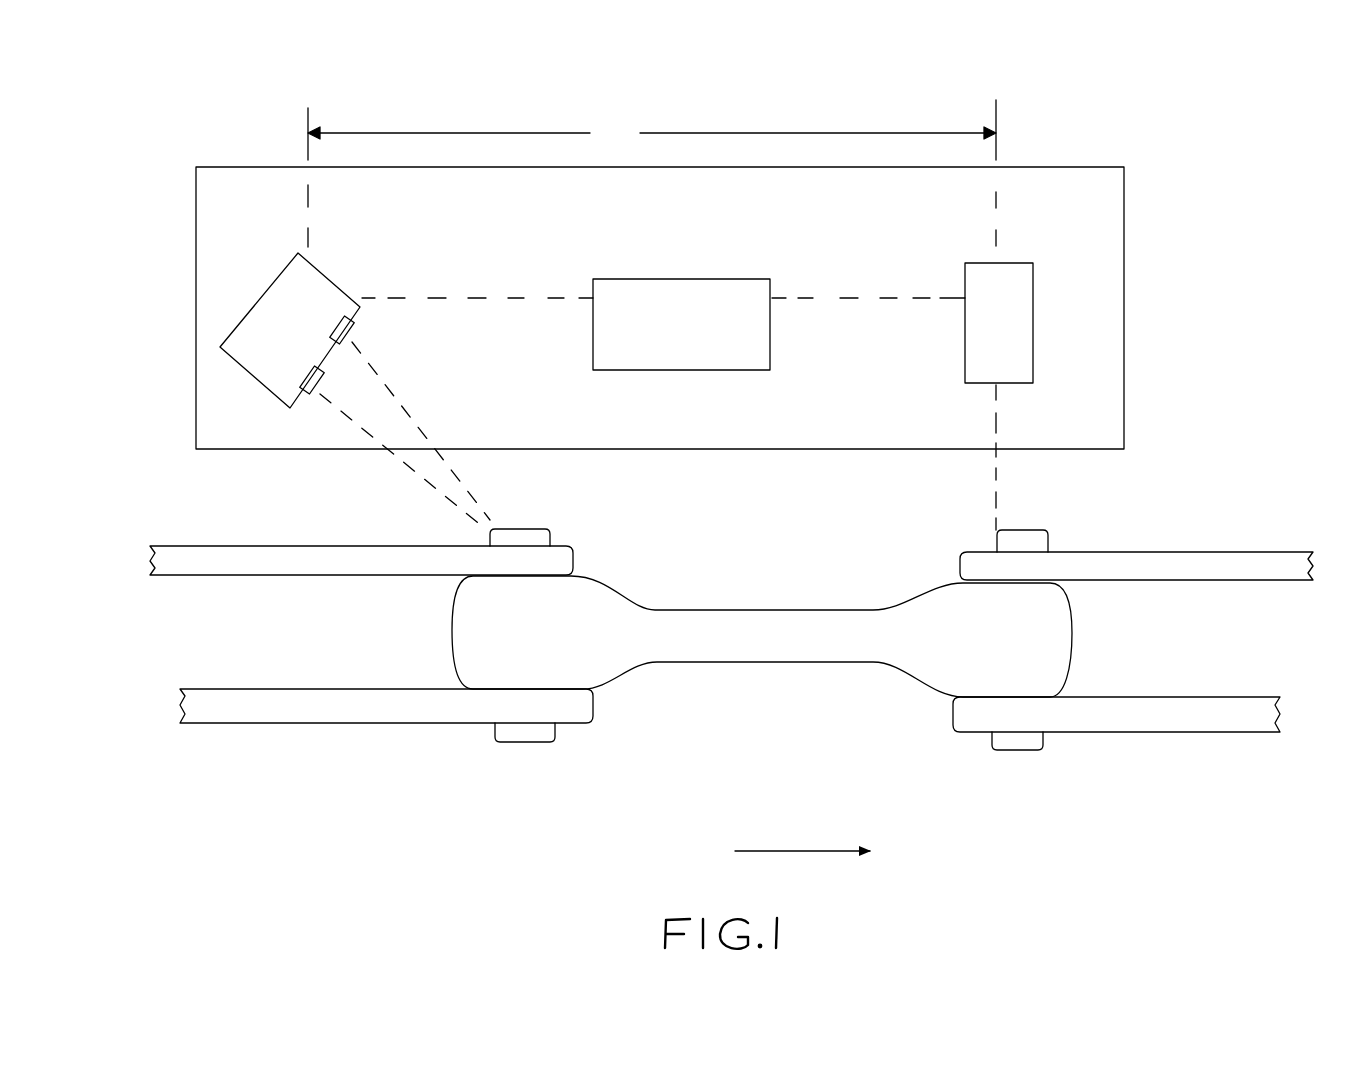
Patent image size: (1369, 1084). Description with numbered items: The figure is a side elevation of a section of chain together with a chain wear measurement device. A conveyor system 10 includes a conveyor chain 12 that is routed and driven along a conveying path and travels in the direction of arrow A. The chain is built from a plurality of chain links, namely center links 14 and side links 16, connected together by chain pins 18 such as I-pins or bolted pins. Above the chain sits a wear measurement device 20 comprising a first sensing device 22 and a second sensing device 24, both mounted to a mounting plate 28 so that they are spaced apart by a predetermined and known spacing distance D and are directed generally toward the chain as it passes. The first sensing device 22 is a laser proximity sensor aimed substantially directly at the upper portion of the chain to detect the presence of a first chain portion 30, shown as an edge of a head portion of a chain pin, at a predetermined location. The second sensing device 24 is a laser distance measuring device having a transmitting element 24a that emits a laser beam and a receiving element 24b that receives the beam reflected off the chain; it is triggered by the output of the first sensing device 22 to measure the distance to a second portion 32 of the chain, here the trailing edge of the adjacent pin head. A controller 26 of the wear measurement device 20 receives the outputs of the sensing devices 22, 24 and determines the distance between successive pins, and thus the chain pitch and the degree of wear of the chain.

The conveyor system 10 is at (1282, 304).
The conveyor chain 12 is at (464, 818).
The center links 14 is at (760, 656).
The side links 16 is at (247, 564).
The chain pins 18 is at (528, 738).
The wear measurement device 20 is at (128, 178).
The first sensing device 22 is at (1018, 326).
The second sensing device 24 is at (318, 292).
The transmitting element 24a is at (300, 388).
The receiving element 24b is at (334, 326).
The controller 26 is at (663, 292).
The mounting plate 28 is at (1069, 186).
The first chain portion 30 is at (986, 526).
The second portion of the chain 32 is at (492, 520).